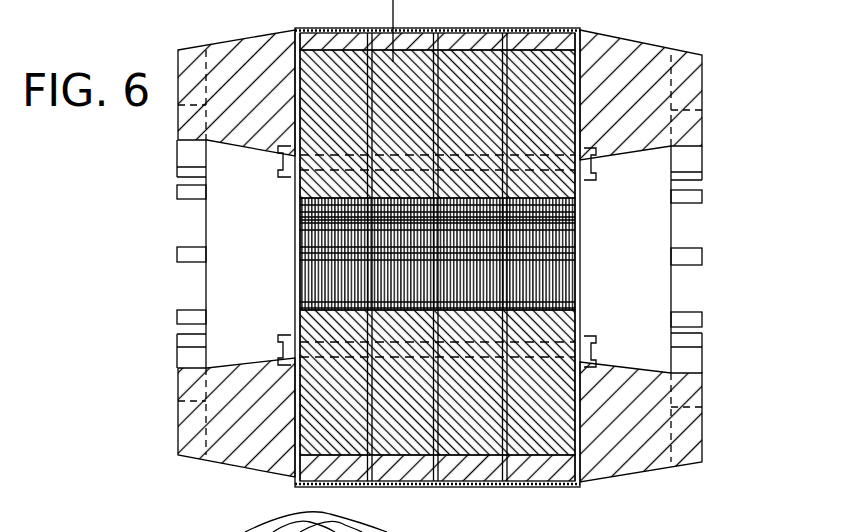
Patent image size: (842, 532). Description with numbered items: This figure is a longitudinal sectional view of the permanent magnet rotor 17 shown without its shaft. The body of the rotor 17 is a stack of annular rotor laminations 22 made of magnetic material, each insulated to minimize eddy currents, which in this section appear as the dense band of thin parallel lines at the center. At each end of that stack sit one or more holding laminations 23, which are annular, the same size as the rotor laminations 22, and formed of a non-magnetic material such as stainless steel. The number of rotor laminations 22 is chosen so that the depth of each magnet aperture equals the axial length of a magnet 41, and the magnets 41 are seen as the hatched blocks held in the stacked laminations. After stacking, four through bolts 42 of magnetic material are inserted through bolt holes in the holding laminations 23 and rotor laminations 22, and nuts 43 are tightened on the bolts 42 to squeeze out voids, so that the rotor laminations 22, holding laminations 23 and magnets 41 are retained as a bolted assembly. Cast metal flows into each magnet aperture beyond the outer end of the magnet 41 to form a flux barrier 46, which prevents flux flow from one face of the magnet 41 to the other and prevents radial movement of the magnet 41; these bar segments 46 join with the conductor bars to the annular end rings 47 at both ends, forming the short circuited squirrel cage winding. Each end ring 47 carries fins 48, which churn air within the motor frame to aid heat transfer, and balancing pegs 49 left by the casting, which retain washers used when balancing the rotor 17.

The rotor 17 is at (622, 485).
The rotor laminations 22 is at (480, 42).
The holding laminations 23 is at (437, 45).
The magnet 41 is at (327, 66).
The through bolts 42 is at (590, 345).
The nuts 43 is at (278, 335).
The flux barrier (bar segments) 46 is at (325, 66).
The end rings 47 is at (228, 52).
The fins 48 is at (193, 115).
The balancing pegs 49 is at (190, 313).